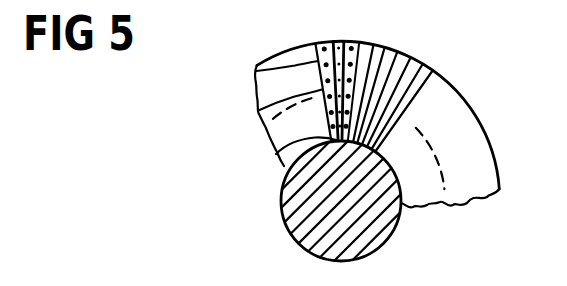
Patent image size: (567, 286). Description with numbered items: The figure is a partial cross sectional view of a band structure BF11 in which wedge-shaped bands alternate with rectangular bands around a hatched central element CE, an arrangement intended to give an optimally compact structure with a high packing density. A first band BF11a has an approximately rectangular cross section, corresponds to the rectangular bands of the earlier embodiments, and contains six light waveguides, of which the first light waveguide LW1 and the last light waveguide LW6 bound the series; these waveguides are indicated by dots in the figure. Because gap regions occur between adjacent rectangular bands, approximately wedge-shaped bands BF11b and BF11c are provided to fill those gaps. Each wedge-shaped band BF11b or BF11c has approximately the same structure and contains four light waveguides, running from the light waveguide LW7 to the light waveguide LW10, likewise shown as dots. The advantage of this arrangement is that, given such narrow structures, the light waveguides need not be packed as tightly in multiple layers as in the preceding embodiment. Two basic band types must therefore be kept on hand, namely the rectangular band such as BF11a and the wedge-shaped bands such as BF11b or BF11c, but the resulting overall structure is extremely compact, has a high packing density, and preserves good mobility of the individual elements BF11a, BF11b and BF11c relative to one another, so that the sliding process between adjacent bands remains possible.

The light waveguide LW7 is at (322, 62).
The light waveguide LW1 is at (342, 43).
The band structure BF11 is at (350, 43).
The first band BF11a is at (357, 84).
The wedge-shaped band BF11b is at (257, 71).
The wedge-shaped band BF11c is at (357, 102).
The light waveguide LW10 is at (260, 110).
The light waveguide LW6 is at (273, 153).
The core element CE is at (313, 206).